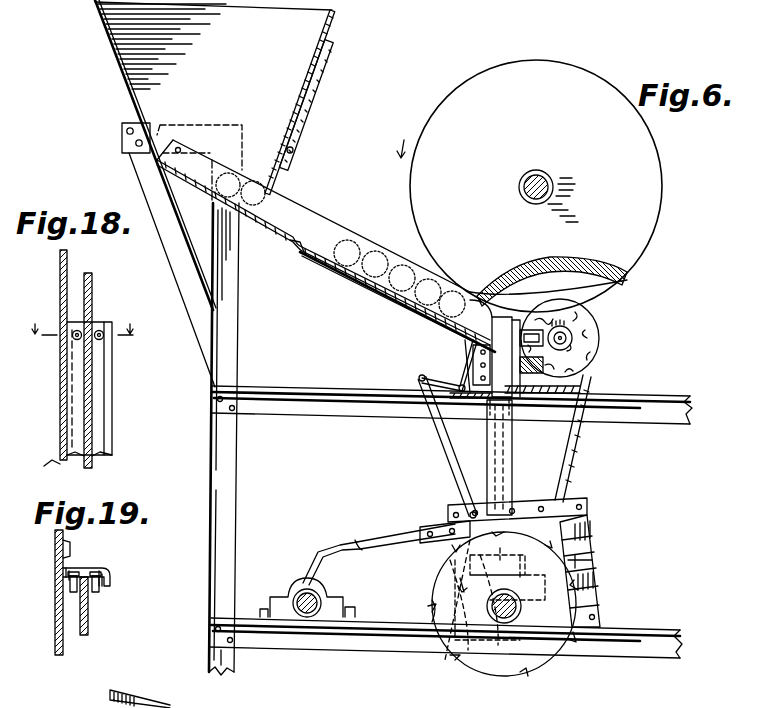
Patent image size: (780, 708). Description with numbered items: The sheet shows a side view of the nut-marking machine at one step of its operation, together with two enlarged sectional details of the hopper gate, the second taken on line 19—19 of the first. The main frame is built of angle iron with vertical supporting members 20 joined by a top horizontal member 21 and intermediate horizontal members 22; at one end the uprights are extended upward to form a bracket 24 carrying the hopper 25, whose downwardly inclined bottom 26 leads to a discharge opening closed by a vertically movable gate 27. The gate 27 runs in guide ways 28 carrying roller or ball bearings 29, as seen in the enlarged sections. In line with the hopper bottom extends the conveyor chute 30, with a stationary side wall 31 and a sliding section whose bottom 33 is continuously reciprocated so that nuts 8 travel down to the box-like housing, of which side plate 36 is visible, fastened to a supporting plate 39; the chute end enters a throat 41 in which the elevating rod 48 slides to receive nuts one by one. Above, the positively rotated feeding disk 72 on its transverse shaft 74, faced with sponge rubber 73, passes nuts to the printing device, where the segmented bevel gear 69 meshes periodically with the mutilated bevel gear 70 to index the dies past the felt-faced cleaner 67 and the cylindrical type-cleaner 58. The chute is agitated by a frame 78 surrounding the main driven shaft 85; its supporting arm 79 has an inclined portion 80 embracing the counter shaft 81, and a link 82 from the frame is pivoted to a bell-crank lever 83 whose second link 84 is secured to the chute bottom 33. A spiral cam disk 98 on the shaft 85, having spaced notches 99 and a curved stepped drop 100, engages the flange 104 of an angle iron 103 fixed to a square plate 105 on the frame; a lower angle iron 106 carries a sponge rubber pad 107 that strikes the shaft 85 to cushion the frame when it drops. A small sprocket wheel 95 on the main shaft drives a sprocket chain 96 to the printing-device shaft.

In FIG. 6, the balls 8 is at (264, 162).
In FIG. 18, the section line 19— 19 is at (84, 335).
In FIG. 6, the vertical supporting members 20 is at (237, 496).
In FIG. 6, the top horizontal member 21 is at (668, 402).
In FIG. 6, the intermediate horizontal members 22 is at (662, 632).
In FIG. 6, the bracket 24 is at (126, 148).
In FIG. 6, the hopper 25 is at (114, 52).
In FIG. 18, the hopper 25 is at (58, 408).
In FIG. 19, the hopper 25 is at (54, 598).
In FIG. 6, the downwardly inclined bottom 26 is at (206, 192).
In FIG. 6, the gate 27 is at (333, 36).
In FIG. 18, the gate 27 is at (92, 378).
In FIG. 19, the gate 27 is at (90, 626).
In FIG. 6, the guide ways 28 is at (322, 90).
In FIG. 18, the guide ways 28 is at (113, 398).
In FIG. 19, the guide ways 28 is at (92, 568).
In FIG. 6, the roller or ball bearings 29 is at (294, 148).
In FIG. 18, the roller or ball bearings 29 is at (100, 330).
In FIG. 19, the roller or ball bearings 29 is at (100, 590).
In FIG. 6, the conveyor chute 30 is at (365, 228).
In FIG. 6, the stationary side wall 31 is at (384, 256).
In FIG. 6, the bottom 33 is at (362, 270).
In FIG. 6, the side plate 36 is at (490, 350).
In FIG. 6, the supporting plate 39 is at (552, 396).
In FIG. 6, the throat 41 is at (477, 385).
In FIG. 6, the elevating rod 48 is at (438, 366).
In FIG. 6, the cylindrical type-cleaner 58 is at (548, 388).
In FIG. 6, the fine felt 67 is at (600, 338).
In FIG. 6, the segmented bevel gear 69 is at (575, 328).
In FIG. 6, the mutilated bevel gear 70 is at (545, 352).
In FIG. 6, the feeding disk 72 is at (534, 78).
In FIG. 6, the sponge rubber facing 73 is at (625, 282).
In FIG. 6, the shaft 74 is at (538, 170).
In FIG. 6, the frame 78 is at (588, 500).
In FIG. 6, the supporting arm 79 is at (405, 530).
In FIG. 6, the downwardly inclined portion 80 is at (312, 567).
In FIG. 6, the shaft 81 is at (307, 614).
In FIG. 6, the link 82 is at (446, 452).
In FIG. 6, the bell-crank lever 83 is at (420, 375).
In FIG. 6, the second link 84 is at (381, 300).
In FIG. 6, the main driven shaft 85 is at (504, 622).
In FIG. 6, the sprocket wheel 95 is at (464, 666).
In FIG. 6, the sprocket chain 96 is at (572, 476).
In FIG. 6, the spiral cam disk 98 is at (526, 656).
In FIG. 6, the notches 99 is at (433, 632).
In FIG. 6, the curved stepped portion 100 is at (585, 605).
In FIG. 6, the angle iron 103 is at (588, 514).
In FIG. 6, the flange 104 is at (594, 540).
In FIG. 6, the square plate 105 is at (595, 556).
In FIG. 6, the angle iron 106 is at (597, 576).
In FIG. 6, the sponge rubber pad 107 is at (517, 594).